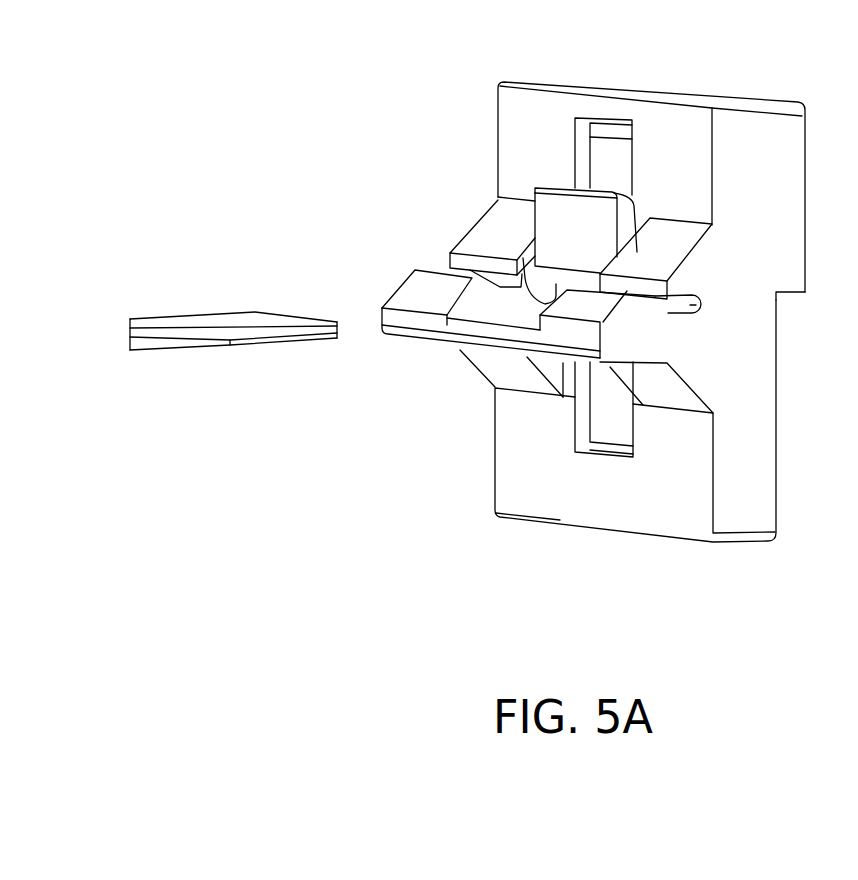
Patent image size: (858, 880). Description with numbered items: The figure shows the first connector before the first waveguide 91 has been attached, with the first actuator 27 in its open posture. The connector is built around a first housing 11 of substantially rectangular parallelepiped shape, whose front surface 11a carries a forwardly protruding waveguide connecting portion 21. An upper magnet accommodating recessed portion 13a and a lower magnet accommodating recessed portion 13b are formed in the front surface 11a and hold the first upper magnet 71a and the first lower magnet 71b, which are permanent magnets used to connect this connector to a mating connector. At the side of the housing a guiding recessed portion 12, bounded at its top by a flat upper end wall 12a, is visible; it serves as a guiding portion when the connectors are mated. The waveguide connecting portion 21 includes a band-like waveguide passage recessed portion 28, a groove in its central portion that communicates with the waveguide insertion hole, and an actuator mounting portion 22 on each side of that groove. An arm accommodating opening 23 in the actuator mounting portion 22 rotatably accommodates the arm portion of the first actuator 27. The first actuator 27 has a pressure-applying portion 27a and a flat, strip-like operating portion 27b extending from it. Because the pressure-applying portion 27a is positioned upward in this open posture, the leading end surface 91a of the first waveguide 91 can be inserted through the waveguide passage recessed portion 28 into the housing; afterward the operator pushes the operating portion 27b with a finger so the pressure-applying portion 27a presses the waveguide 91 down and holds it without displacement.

The first housing 11 is at (768, 101).
The front surface 11a is at (516, 513).
The guiding recessed portion 12 is at (778, 502).
The upper end wall 12a is at (790, 293).
The upper magnet accommodating recessed portion 13a is at (583, 130).
The lower magnet accommodating recessed portion 13b is at (580, 443).
The waveguide connecting portion 21 is at (677, 400).
The actuator mounting portion 22 is at (404, 284).
The arm accommodating opening 23 is at (703, 303).
The first actuator 27 is at (541, 186).
The pressure-applying portion 27a is at (484, 220).
The operating portion 27b is at (563, 205).
The waveguide passage recessed portion 28 is at (512, 322).
The first upper magnet 71a is at (612, 143).
The first lower magnet 71b is at (618, 430).
The first waveguide 91 is at (258, 348).
The leading end surface 91a is at (338, 344).